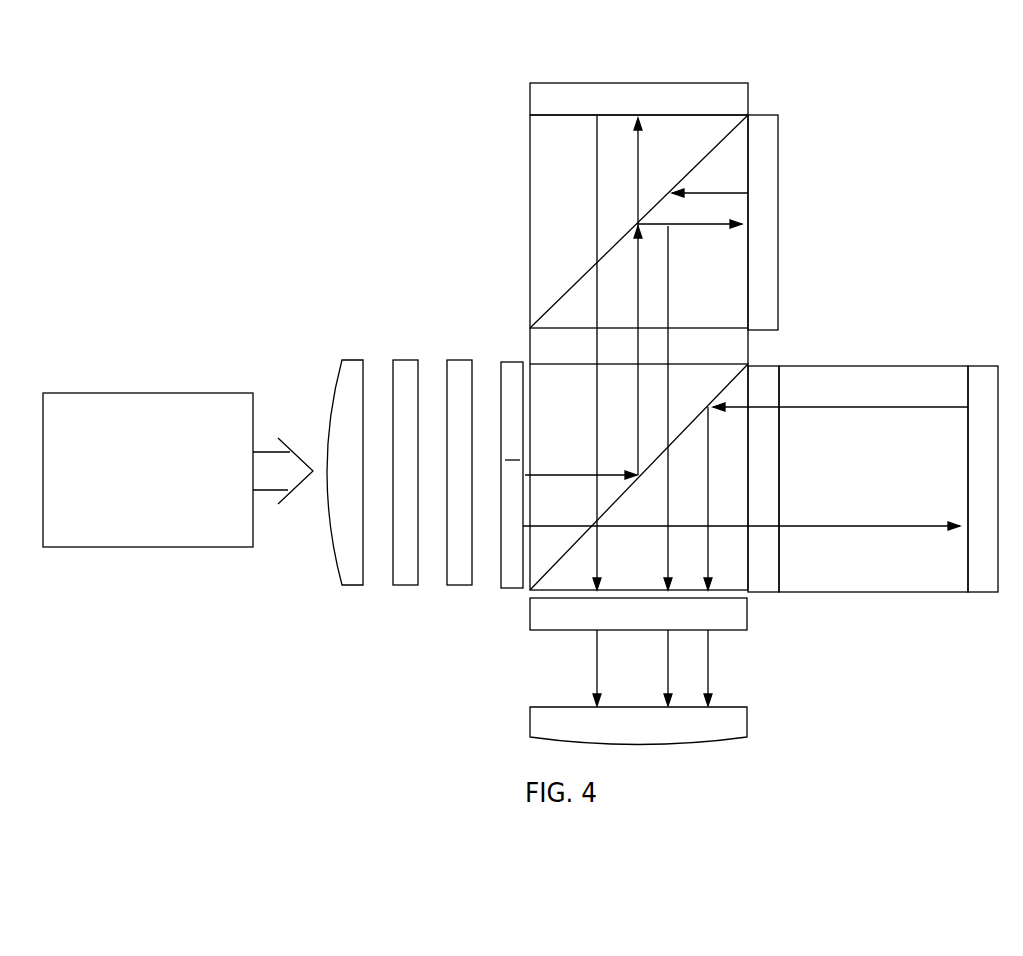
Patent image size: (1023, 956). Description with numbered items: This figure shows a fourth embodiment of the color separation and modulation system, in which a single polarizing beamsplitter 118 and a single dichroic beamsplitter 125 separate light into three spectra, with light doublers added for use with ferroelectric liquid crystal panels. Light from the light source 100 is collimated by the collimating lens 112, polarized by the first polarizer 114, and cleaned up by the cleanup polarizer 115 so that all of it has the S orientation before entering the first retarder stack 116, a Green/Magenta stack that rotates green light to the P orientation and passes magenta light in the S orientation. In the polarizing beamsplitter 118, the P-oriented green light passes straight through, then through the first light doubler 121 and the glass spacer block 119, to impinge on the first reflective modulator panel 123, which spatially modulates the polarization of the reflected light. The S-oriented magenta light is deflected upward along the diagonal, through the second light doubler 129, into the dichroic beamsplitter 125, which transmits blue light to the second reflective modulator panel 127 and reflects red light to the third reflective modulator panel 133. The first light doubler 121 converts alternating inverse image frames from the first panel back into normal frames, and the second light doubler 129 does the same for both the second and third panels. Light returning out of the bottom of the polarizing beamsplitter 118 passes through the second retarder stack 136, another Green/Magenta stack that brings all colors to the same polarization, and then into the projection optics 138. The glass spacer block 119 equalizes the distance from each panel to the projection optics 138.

The light source 100 is at (150, 393).
The collimating lens 112 is at (353, 358).
The first polarizer 114 is at (407, 357).
The cleanup polarizer 115 is at (462, 358).
The first retarder stack 116 is at (513, 358).
The polarizing beamsplitter 118 is at (550, 582).
The glass spacer block 119 is at (877, 575).
The first light doubler 121 is at (767, 378).
The first reflective modulator panel 123 is at (985, 368).
The dichroic beamsplitter 125 is at (528, 142).
The second reflective modulator panel 127 is at (528, 102).
The second light doubler 129 is at (750, 348).
The third reflective modulator panel 133 is at (762, 117).
The second retarder stack 136 is at (748, 618).
The projection optics 138 is at (747, 722).